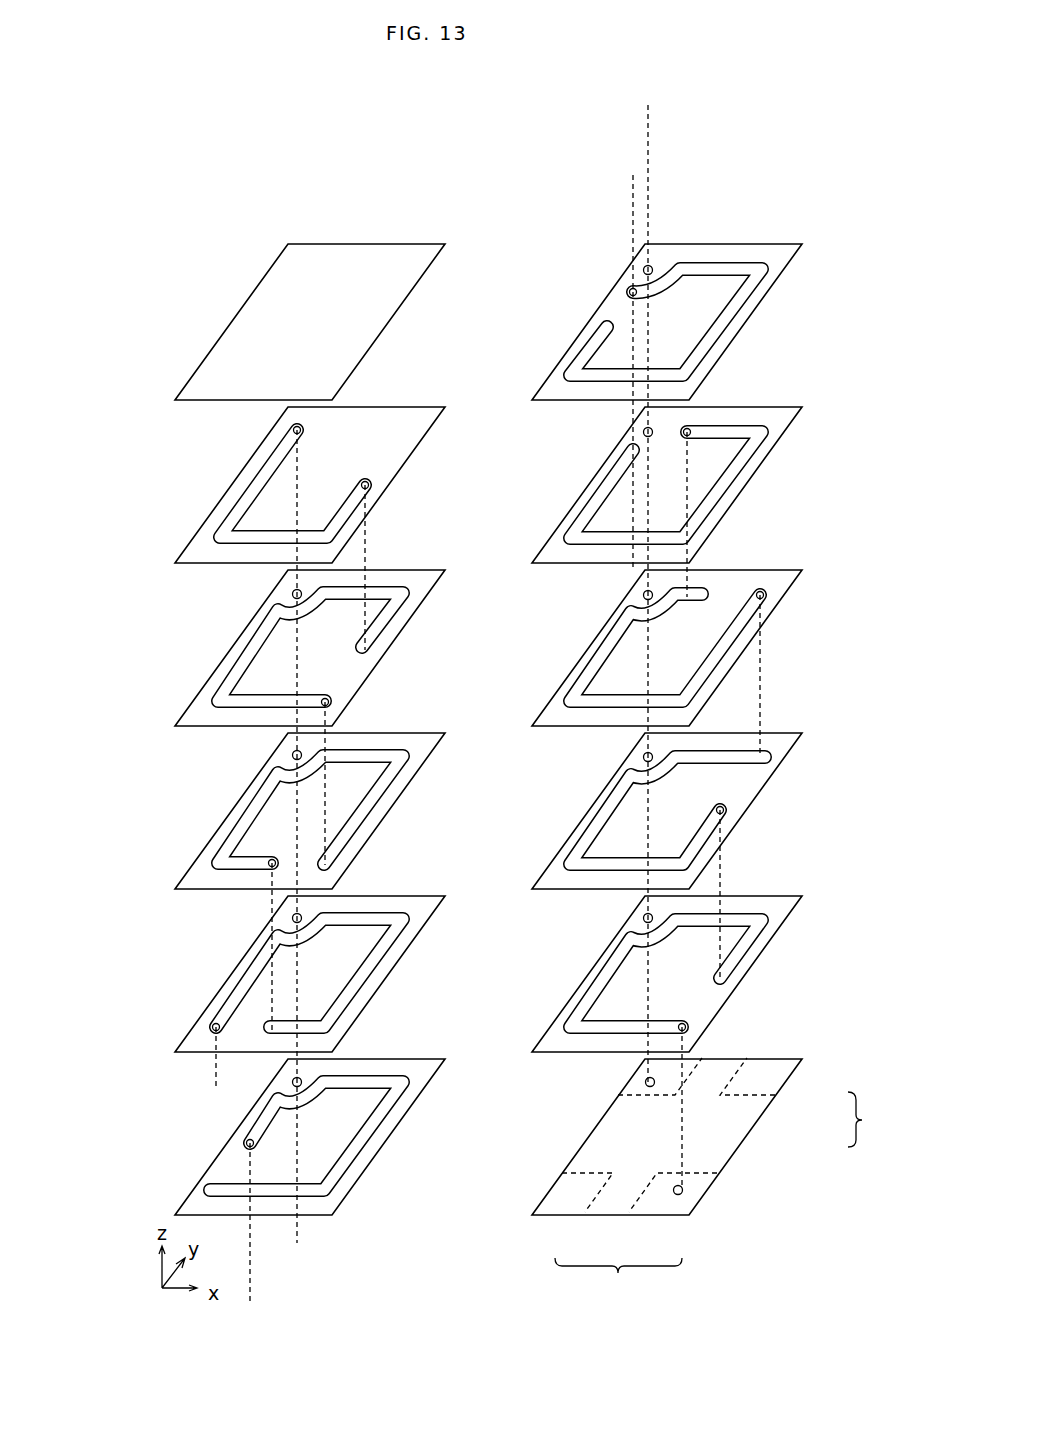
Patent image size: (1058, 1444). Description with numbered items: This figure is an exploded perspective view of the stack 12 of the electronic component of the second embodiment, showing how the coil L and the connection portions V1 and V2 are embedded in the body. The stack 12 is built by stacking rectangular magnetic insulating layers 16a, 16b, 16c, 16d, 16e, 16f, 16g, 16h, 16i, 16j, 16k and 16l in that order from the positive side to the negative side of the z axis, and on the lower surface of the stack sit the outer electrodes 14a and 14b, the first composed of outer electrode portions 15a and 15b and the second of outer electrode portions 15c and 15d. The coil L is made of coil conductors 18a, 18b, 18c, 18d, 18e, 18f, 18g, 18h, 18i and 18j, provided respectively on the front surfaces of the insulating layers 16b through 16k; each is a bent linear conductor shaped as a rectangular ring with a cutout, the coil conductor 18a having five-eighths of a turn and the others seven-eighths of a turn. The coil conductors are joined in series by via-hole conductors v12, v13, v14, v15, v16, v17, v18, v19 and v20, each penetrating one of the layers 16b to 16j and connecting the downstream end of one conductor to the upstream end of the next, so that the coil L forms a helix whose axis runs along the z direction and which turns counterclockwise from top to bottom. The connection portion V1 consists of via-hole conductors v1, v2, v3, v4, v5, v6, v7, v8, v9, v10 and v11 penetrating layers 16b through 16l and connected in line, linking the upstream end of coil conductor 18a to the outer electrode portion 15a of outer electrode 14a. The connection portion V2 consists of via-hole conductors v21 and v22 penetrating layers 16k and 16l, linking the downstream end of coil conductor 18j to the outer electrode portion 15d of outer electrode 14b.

The stack 12 is at (241, 227).
The insulating layer 16a is at (175, 400).
The insulating layer 16b is at (175, 563).
The insulating layer 16c is at (175, 726).
The insulating layer 16d is at (175, 889).
The insulating layer 16e is at (175, 1052).
The insulating layer 16f is at (175, 1215).
The insulating layer 16g is at (802, 244).
The insulating layer 16h is at (802, 407).
The insulating layer 16i is at (802, 570).
The insulating layer 16j is at (802, 733).
The insulating layer 16k is at (802, 896).
The insulating layer 16l is at (803, 1058).
The coil conductor 18a is at (347, 503).
The coil conductor 18b is at (377, 633).
The coil conductor 18c is at (377, 800).
The coil conductor 18d is at (377, 962).
The coil conductor 18e is at (377, 1127).
The coil conductor 18f is at (738, 300).
The coil conductor 18g is at (745, 457).
The coil conductor 18h is at (738, 630).
The coil conductor 18i is at (603, 818).
The coil conductor 18j is at (738, 952).
The via-hole conductor v1 is at (298, 491).
The via-hole conductor v2 is at (298, 645).
The via-hole conductor v3 is at (296, 833).
The via-hole conductor v4 is at (299, 980).
The via-hole conductor v5 is at (299, 1137).
The via-hole conductor v6 is at (652, 313).
The via-hole conductor v7 is at (647, 497).
The via-hole conductor v8 is at (652, 650).
The via-hole conductor v9 is at (652, 818).
The via-hole conductor v10 is at (652, 976).
The via-hole conductor v11 is at (645, 1082).
The via-hole conductor v12 is at (365, 543).
The via-hole conductor v13 is at (325, 787).
The via-hole conductor v14 is at (271, 910).
The via-hole conductor v15 is at (218, 1077).
The via-hole conductor v16 is at (253, 1269).
The via-hole conductor v17 is at (633, 355).
The via-hole conductor v18 is at (687, 490).
The via-hole conductor v19 is at (761, 690).
The via-hole conductor v20 is at (721, 860).
The via-hole conductor v21 is at (683, 1125).
The via-hole conductor v22 is at (682, 1194).
The connection portion V1 is at (309, 673).
The connection portion V2 is at (665, 1140).
The coil L is at (208, 798).
The outer electrode portion 15a is at (690, 1067).
The outer electrode portion 15b is at (747, 1093).
The outer electrode portion 15c is at (572, 1203).
The outer electrode portion 15d is at (648, 1203).
The outer electrode 14a is at (876, 1119).
The outer electrode 14b is at (618, 1285).